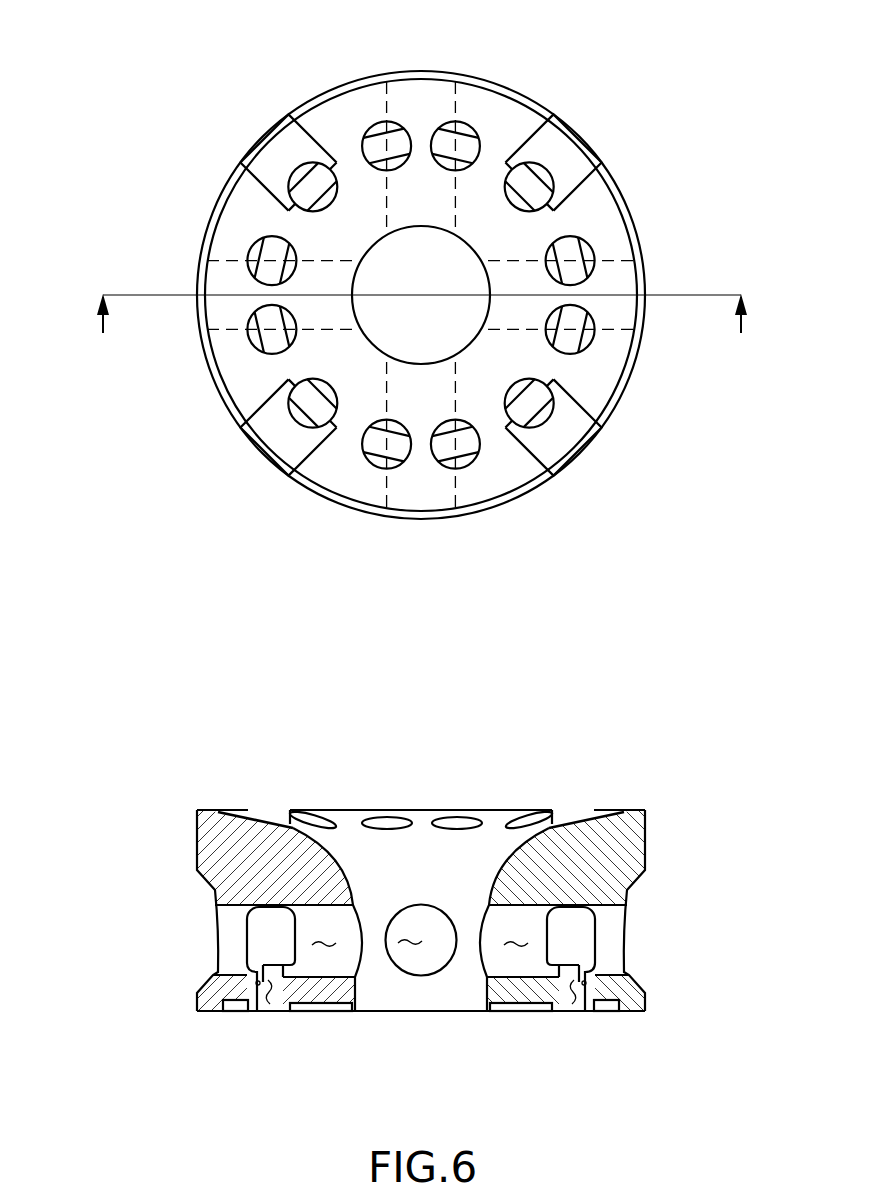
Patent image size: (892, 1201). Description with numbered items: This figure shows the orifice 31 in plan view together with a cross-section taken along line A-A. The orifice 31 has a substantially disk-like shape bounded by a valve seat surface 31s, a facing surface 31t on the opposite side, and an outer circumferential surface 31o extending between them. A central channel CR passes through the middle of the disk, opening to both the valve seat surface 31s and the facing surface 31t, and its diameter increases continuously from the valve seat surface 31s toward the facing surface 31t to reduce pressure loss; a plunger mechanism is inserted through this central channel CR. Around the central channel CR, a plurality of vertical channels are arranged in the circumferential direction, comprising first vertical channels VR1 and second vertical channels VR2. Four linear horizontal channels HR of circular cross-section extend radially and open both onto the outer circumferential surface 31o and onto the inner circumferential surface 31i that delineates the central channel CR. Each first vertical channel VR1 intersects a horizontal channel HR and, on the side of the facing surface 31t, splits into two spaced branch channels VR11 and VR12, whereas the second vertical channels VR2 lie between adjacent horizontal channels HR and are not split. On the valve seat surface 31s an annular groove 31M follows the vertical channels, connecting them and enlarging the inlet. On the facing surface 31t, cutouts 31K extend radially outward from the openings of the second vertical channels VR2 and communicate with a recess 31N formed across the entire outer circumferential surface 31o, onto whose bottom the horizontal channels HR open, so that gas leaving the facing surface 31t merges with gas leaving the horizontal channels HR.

The orifice 31 is at (227, 82).
The facing surface 31t is at (235, 818).
The cutouts 31K is at (569, 817).
The second vertical channels VR2 is at (520, 818).
The first vertical channels VR1 is at (507, 755).
The branch channel VR12 is at (387, 824).
The branch channel VR11 is at (457, 824).
The outer circumferential surface 31o is at (645, 849).
The recess 31N is at (214, 896).
The annular groove 31M is at (590, 978).
The valve seat surface 31s is at (587, 985).
The horizontal channels HR is at (517, 950).
The inner circumferential surface 31i is at (488, 992).
The central channel CR is at (467, 886).